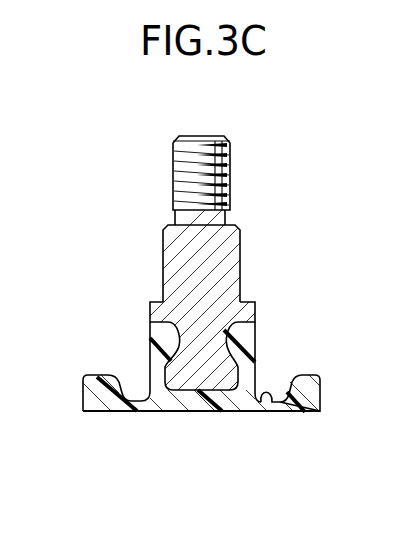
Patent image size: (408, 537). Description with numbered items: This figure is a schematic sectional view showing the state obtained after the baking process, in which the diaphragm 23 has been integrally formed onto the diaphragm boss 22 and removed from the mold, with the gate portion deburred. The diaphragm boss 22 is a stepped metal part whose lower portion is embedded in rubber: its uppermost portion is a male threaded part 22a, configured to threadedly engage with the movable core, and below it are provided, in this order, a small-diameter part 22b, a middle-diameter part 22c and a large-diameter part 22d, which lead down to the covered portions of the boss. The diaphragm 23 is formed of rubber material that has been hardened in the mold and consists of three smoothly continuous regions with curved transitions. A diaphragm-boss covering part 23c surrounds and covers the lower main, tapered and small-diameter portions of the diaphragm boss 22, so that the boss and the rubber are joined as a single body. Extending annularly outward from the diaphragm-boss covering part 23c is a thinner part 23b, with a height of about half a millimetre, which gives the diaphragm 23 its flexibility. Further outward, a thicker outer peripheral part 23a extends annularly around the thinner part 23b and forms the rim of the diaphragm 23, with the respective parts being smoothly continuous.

The diaphragm boss 22 is at (146, 245).
The male threaded part 22a is at (203, 136).
The small-diameter part 22b is at (226, 216).
The middle-diameter part 22c is at (241, 262).
The large-diameter part 22d is at (256, 308).
The diaphragm 23 is at (136, 340).
The thicker outer peripheral part 23a is at (300, 375).
The thinner part 23b is at (265, 397).
The diaphragm-boss covering part 23c is at (257, 343).